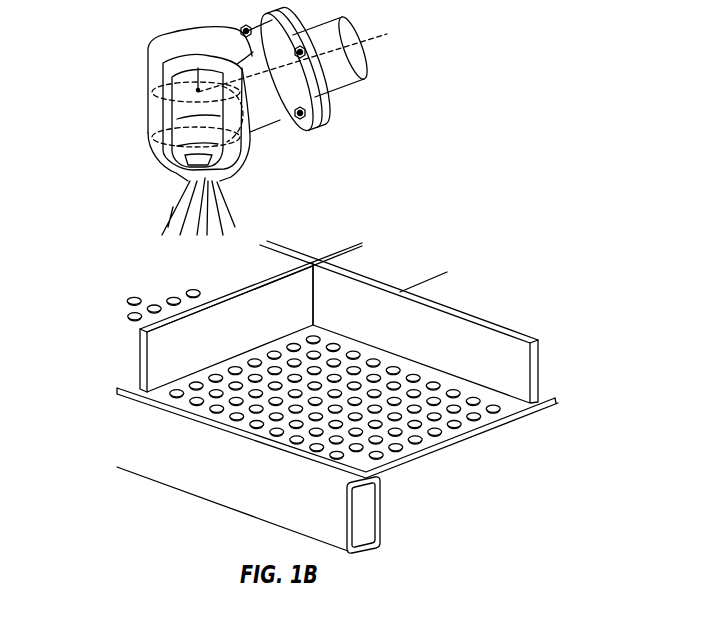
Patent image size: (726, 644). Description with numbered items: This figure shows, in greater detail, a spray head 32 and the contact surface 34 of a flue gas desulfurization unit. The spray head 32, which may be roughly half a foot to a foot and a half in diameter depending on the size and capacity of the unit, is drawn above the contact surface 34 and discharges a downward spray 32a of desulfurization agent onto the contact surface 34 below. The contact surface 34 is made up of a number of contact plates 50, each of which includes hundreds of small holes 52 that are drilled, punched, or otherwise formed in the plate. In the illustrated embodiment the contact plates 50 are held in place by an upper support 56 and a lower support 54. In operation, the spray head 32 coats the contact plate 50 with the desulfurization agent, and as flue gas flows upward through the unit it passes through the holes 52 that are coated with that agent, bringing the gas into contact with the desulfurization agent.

The spray head 32 is at (168, 38).
The spray 32a is at (172, 197).
The contact surface 34 is at (317, 397).
The contact plate 50 is at (458, 431).
The holes 52 is at (489, 413).
The lower support 54 is at (234, 487).
The upper support 56 is at (178, 348).